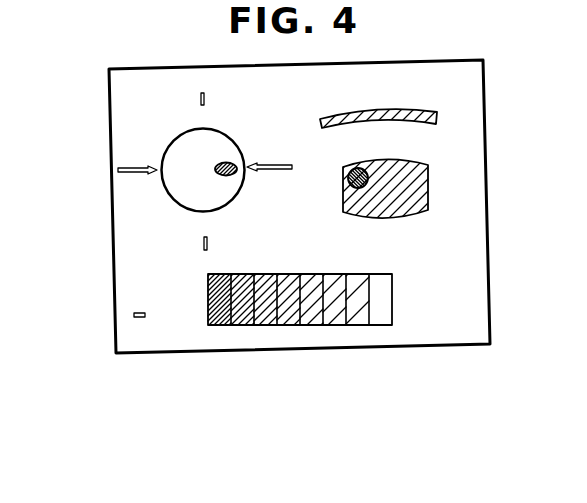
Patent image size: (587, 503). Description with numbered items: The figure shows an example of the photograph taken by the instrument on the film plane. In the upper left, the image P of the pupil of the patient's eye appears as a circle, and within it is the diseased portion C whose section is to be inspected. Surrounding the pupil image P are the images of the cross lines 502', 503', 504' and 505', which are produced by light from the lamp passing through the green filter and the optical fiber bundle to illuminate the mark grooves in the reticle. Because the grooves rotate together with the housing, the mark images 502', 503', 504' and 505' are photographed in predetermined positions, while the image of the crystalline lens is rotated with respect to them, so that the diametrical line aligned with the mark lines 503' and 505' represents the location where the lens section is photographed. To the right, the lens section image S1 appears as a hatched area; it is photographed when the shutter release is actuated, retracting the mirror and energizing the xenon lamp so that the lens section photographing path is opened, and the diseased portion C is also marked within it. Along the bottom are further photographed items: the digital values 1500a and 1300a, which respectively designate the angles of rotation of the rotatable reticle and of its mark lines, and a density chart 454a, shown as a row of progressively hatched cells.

The pupil image P is at (216, 146).
The diseased portion C is at (229, 161).
The mark image 502' is at (238, 90).
The mark image 503' is at (272, 190).
The mark image 504' is at (245, 247).
The mark image 505' is at (101, 194).
The lens section image S1 is at (427, 190).
The density chart 454a is at (337, 327).
The digital value 1500a is at (170, 331).
The digital value 1300a is at (444, 323).